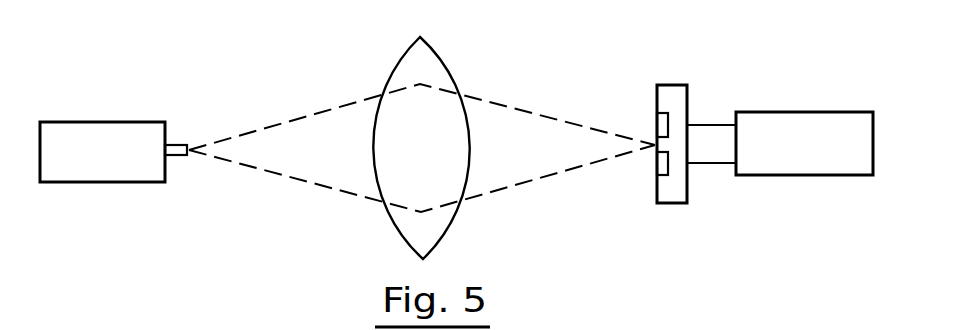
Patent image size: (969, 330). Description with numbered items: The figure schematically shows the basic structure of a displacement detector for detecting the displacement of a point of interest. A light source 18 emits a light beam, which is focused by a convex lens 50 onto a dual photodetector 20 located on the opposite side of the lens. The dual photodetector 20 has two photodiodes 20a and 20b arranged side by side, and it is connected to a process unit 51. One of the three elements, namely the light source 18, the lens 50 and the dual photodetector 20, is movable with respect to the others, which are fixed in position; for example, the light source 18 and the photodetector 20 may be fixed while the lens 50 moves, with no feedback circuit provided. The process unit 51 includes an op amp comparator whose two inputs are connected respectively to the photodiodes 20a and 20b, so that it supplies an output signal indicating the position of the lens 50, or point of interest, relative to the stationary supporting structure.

The light source 18 is at (153, 178).
The convex lens 50 is at (390, 221).
The dual photodetector 20 is at (683, 193).
The photodiode 20a is at (657, 118).
The photodiode 20b is at (657, 163).
The process unit 51 is at (742, 112).